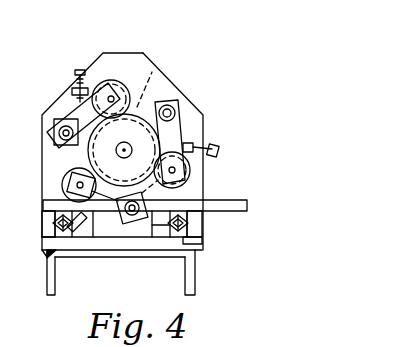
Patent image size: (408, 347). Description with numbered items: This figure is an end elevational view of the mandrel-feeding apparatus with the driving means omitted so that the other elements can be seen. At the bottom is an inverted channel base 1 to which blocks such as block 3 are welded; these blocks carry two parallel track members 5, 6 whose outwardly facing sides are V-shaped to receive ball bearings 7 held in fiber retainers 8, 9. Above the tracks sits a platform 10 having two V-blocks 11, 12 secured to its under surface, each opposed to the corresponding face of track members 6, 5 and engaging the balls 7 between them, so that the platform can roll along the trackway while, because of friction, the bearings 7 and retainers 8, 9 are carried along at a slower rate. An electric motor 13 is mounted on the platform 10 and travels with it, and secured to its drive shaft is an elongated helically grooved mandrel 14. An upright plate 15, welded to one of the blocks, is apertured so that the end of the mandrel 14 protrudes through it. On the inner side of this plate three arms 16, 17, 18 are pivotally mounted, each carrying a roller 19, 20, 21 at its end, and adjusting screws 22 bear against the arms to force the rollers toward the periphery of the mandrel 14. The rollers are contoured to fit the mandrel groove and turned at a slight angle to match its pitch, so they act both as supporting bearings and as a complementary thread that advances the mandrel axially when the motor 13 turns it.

The inverted channel base 1 is at (197, 277).
The block 3 is at (93, 243).
The track member 5 is at (158, 227).
The track member 6 is at (73, 233).
The ball bearings 7 is at (50, 223).
The fiber retainer 8 is at (47, 252).
The fiber retainer 9 is at (203, 243).
The platform 10 is at (247, 202).
The V-block 11 is at (50, 232).
The V-block 12 is at (193, 225).
The electric motor 13 is at (160, 67).
The helically grooved mandrel 14 is at (95, 154).
The upright plate 15 is at (135, 53).
The arm 16 is at (70, 112).
The arm 17 is at (183, 135).
The arm 18 is at (111, 211).
The roller 19 is at (107, 82).
The roller 20 is at (190, 180).
The roller 21 is at (63, 177).
The adjusting screws 22 is at (75, 72).